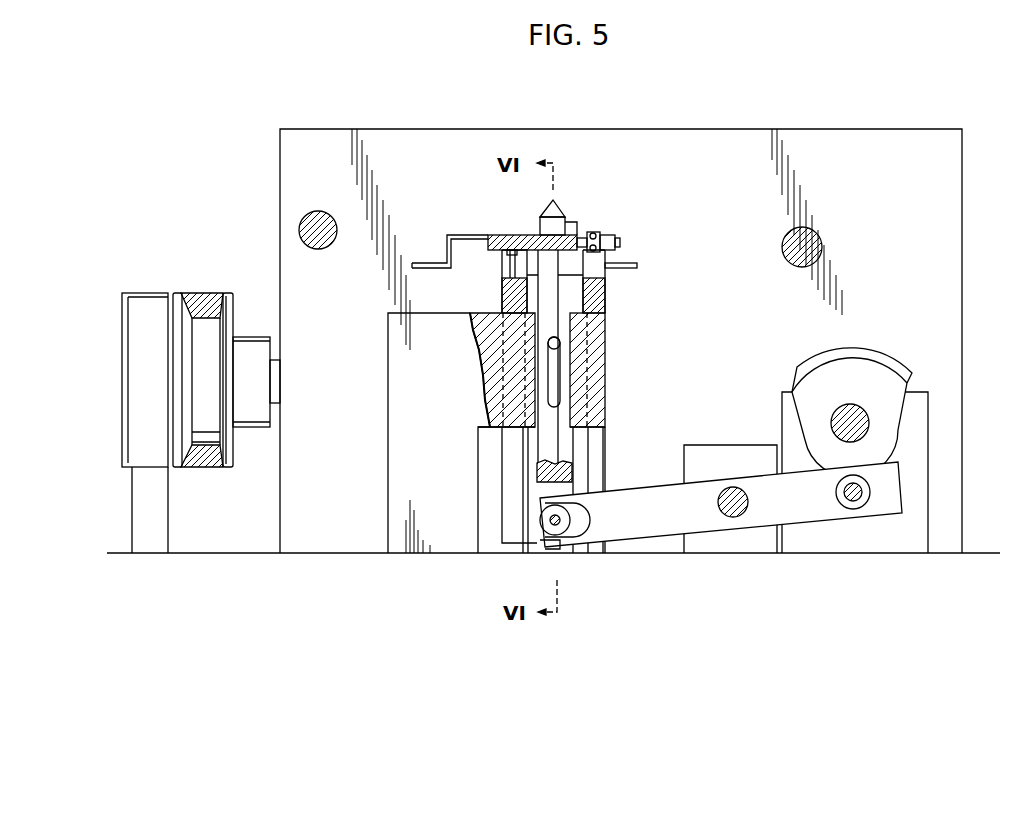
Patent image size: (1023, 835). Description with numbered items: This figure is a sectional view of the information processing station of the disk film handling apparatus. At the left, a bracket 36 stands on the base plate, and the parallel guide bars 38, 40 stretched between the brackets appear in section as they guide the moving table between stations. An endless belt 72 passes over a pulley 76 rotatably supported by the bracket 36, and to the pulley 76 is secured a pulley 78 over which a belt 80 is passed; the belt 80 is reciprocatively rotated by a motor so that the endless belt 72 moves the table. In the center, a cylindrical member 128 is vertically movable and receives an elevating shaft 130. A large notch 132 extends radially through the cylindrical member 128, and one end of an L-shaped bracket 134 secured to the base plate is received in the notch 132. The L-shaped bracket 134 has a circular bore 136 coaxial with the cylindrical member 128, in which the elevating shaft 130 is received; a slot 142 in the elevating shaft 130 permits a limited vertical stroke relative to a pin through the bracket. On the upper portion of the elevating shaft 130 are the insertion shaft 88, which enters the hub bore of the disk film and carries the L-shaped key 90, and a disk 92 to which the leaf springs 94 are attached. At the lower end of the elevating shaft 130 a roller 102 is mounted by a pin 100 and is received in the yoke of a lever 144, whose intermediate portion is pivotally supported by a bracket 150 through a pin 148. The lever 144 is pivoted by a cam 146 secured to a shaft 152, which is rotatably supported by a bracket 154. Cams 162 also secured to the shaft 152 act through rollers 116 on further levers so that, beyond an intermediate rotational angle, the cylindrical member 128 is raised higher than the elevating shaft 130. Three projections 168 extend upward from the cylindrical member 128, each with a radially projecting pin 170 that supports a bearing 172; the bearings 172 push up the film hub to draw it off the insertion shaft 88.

The bracket 36 is at (955, 175).
The guide bar 38 is at (322, 246).
The guide bar 40 is at (822, 247).
The endless belt 72 is at (197, 293).
The pulley 76 is at (236, 300).
The pulley 78 is at (125, 300).
The belt 80 is at (160, 522).
The insertion shaft 88 is at (560, 205).
The key 90 is at (575, 222).
The disk 92 is at (492, 250).
The leaf spring 94 is at (460, 235).
The pin 100 is at (560, 524).
The roller 102 is at (545, 522).
The roller 116 is at (853, 500).
The cylindrical member 128 is at (607, 290).
The elevating shaft 130 is at (560, 405).
The notch 132 is at (608, 315).
The L-shaped bracket 134 is at (422, 322).
The circular bore 136 is at (565, 345).
The slot 142 is at (555, 365).
The lever 144 is at (670, 495).
The cam 146 is at (858, 372).
The pin 148 is at (735, 490).
The bracket 150 is at (707, 445).
The shaft 152 is at (860, 415).
The bracket 154 is at (925, 425).
The cam 162 is at (800, 355).
The projection 168 is at (620, 262).
The pin 170 is at (612, 242).
The bearing 172 is at (595, 238).